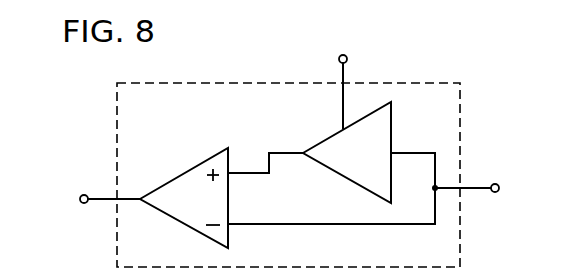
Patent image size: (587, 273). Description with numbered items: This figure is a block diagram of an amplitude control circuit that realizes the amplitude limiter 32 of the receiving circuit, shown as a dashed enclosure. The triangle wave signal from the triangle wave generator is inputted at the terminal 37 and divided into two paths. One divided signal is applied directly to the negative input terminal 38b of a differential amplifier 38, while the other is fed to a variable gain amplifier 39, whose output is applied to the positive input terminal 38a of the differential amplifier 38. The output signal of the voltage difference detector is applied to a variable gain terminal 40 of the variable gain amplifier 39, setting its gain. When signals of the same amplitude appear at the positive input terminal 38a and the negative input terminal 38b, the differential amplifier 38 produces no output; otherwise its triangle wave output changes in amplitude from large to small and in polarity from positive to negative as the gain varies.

The amplitude limiter 32 is at (116, 147).
The terminal 37 is at (470, 187).
The differential amplifier 38 is at (198, 165).
The positive input terminal 38a is at (229, 172).
The negative input terminal 38b is at (229, 226).
The variable gain amplifier 39 is at (334, 136).
The variable gain terminal 40 is at (347, 59).